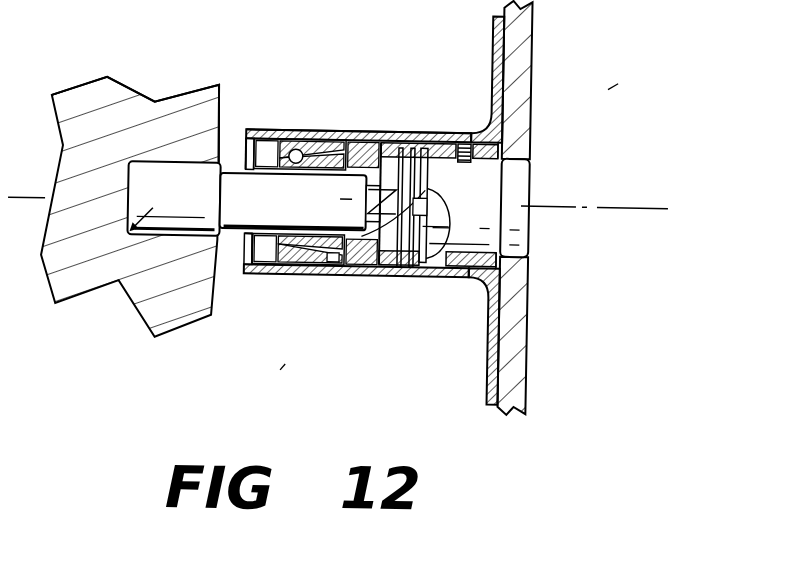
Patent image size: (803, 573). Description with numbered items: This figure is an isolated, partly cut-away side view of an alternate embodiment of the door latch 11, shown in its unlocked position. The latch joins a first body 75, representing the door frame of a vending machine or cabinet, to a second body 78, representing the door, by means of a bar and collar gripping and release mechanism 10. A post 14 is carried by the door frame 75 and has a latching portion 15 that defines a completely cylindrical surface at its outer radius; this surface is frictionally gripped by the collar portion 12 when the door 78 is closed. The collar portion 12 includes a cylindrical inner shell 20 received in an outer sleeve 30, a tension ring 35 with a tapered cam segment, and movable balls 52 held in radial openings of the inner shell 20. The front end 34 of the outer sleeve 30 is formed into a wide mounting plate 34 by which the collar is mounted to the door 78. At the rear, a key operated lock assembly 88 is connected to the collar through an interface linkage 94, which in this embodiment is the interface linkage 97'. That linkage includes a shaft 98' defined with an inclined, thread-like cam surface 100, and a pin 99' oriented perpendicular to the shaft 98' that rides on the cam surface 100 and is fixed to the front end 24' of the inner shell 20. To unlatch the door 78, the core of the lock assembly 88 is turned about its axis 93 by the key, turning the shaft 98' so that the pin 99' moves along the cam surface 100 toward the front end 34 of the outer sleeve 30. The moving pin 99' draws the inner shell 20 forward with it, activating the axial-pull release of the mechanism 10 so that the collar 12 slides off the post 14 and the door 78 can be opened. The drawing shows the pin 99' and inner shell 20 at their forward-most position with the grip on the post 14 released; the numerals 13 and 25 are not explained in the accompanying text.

The bar and collar gripping and release mechanism 10 is at (283, 372).
The door latch 11 is at (606, 86).
The collar portion 12 is at (347, 128).
The gear wheel 13 is at (119, 288).
The post 14 is at (229, 148).
The latching portion 15 is at (333, 214).
The inner shell 20 is at (267, 243).
The front end of inner shell 24' is at (437, 287).
The ball 25 is at (287, 160).
The outer sleeve 30 is at (322, 290).
The front end / mounting plate 34 is at (519, 41).
The tension ring 35 is at (257, 288).
The movable balls 52 is at (293, 144).
The first body (door frame) 75 is at (78, 101).
The second body (door) 78 is at (512, 83).
The lock assembly 88 is at (516, 187).
The axis 93 is at (356, 190).
The interface linkage 94 is at (464, 142).
The interface linkage 97' is at (365, 241).
The shaft 98' is at (409, 249).
The pin 99' is at (452, 157).
The cam surface 100 is at (386, 132).